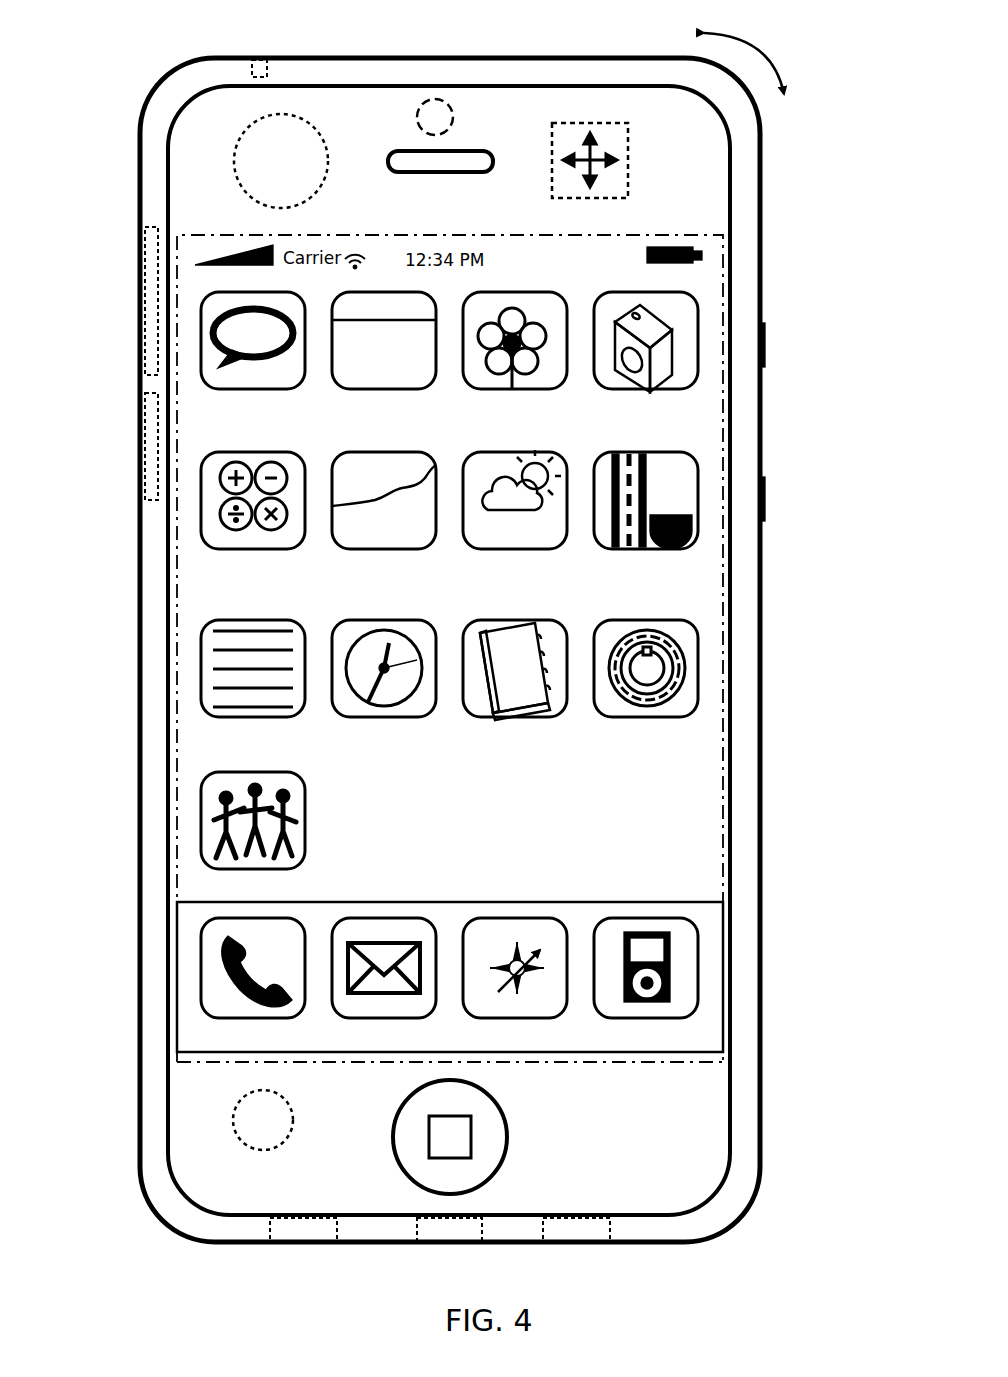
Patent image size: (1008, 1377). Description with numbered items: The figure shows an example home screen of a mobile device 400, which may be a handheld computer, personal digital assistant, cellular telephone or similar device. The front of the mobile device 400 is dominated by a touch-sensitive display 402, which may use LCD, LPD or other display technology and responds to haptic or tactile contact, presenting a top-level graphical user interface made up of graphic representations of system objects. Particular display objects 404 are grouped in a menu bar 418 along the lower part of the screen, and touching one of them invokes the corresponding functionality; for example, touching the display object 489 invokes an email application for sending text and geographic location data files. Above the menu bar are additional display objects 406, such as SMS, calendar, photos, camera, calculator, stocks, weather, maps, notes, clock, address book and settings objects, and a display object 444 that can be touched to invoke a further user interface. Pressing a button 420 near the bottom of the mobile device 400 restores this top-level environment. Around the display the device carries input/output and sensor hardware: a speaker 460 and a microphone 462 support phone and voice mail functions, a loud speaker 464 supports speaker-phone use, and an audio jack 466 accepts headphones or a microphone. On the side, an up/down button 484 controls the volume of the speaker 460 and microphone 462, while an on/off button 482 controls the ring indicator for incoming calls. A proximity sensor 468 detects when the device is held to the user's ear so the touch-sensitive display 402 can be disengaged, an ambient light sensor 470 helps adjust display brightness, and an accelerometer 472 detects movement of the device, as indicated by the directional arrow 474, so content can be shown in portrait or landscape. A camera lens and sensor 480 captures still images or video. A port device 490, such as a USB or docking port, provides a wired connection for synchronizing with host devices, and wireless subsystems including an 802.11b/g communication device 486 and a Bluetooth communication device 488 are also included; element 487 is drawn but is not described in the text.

The mobile device 400 is at (538, 58).
The touch-sensitive display 402 is at (655, 236).
The display objects 404 is at (505, 936).
The additional display objects 406 is at (450, 581).
The menu bar 418 is at (598, 1053).
The button 420 is at (507, 1137).
The display object 444 is at (200, 820).
The speaker 460 is at (410, 172).
The microphone 462 is at (337, 1242).
The loud speaker 464 is at (610, 1242).
The audio jack 466 is at (266, 70).
The proximity sensor 468 is at (238, 168).
The ambient light sensor 470 is at (285, 1145).
The accelerometer 472 is at (628, 165).
The directional arrow 474 is at (768, 62).
The camera lens and sensor 480 is at (456, 116).
The on/off button 482 is at (766, 347).
The up/down button 484 is at (766, 500).
The 802.11b/g communication device 486 is at (145, 230).
The text messaging application icon 487 is at (198, 335).
The Bluetooth communication device 488 is at (145, 395).
The display object 489 is at (427, 920).
The port device 490 is at (482, 1242).